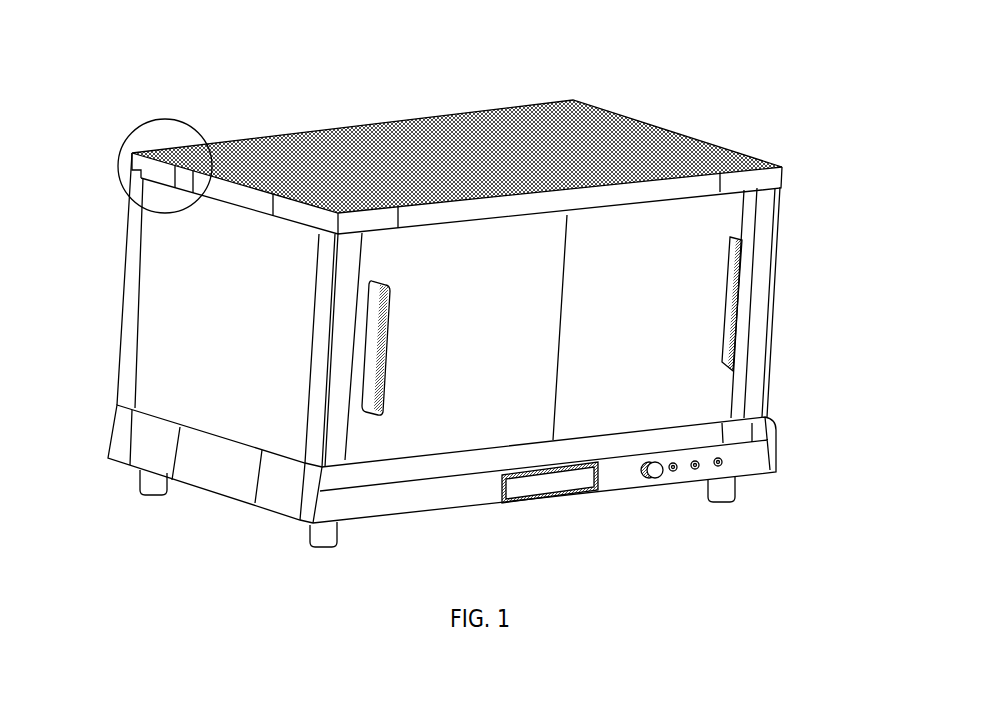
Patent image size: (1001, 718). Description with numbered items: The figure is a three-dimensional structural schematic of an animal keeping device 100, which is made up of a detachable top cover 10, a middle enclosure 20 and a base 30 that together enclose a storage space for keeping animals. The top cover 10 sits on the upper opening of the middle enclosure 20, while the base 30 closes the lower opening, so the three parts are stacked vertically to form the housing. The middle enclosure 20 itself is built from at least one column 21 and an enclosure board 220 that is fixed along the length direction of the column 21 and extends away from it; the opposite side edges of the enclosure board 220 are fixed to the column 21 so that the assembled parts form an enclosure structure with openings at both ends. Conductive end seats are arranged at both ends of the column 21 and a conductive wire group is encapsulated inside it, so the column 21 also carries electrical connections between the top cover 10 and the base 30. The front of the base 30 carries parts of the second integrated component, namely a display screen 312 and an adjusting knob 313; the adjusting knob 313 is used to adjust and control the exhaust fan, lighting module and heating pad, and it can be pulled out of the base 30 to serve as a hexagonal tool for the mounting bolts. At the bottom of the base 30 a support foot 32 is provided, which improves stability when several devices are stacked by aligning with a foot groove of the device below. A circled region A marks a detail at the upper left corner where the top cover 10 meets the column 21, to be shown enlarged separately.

The animal keeping device 100 is at (413, 44).
The top cover 10 is at (672, 132).
The middle enclosure 20 is at (863, 195).
The column 21 is at (763, 277).
The enclosure board 220 is at (713, 372).
The base 30 is at (764, 466).
The foot 32 is at (723, 490).
The display screen 312 is at (522, 492).
The adjusting knob 313 is at (660, 480).
The detail region A is at (132, 133).